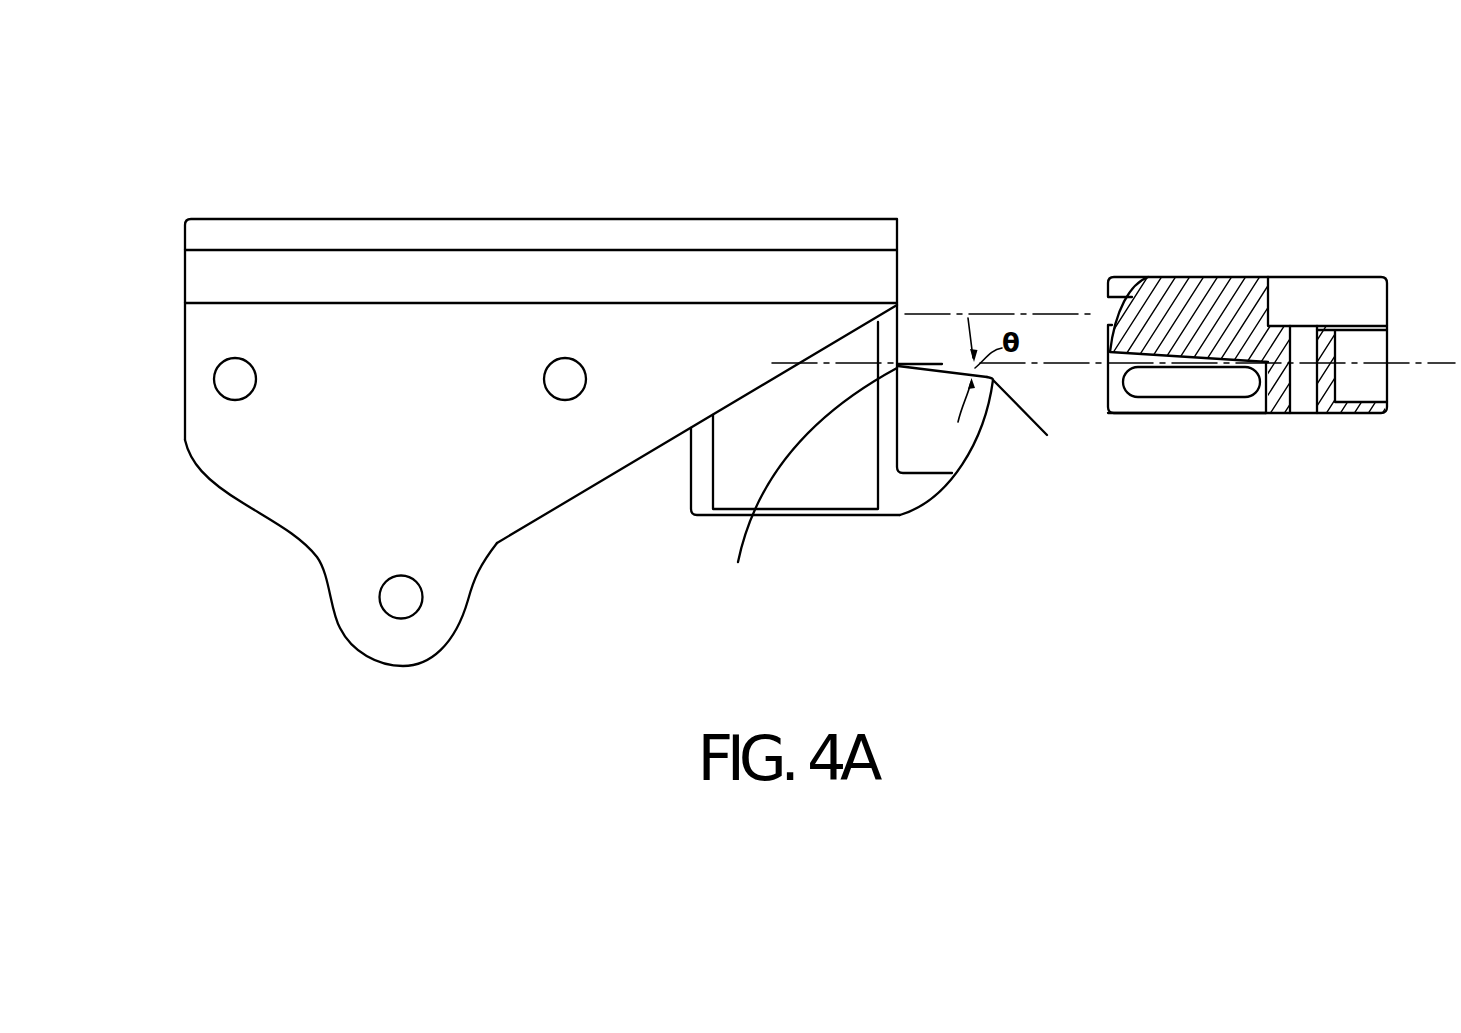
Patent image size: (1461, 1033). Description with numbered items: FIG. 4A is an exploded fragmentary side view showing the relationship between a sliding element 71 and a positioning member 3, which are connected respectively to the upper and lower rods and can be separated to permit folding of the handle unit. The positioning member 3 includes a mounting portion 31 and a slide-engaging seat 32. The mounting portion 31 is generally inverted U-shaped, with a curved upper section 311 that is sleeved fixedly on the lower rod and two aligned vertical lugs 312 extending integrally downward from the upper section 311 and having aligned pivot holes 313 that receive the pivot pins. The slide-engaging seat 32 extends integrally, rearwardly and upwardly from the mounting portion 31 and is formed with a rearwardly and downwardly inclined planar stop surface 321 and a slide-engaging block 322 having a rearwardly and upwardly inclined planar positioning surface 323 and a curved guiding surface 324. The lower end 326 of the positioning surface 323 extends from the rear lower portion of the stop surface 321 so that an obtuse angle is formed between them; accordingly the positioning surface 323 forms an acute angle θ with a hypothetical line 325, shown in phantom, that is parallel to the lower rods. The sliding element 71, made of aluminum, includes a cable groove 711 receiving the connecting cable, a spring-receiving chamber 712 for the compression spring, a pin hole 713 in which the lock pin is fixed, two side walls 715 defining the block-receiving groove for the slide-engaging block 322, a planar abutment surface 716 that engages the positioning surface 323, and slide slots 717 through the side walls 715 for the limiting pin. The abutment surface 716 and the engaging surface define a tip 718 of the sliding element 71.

The positioning member 3 is at (592, 185).
The mounting portion 31 is at (492, 552).
The curved upper section 311 is at (485, 233).
The vertical lugs 312 is at (547, 480).
The pivot holes 313 is at (401, 597).
The slide-engaging seat 32 is at (840, 495).
The stop surface 321 is at (897, 347).
The slide-engaging block 322 is at (943, 428).
The positioning surface 323 is at (932, 374).
The curved guiding surface 324 is at (1033, 427).
The hypothetical line 325 is at (942, 362).
The lower end 326 is at (805, 486).
The sliding element 71 is at (1238, 433).
The cable groove 711 is at (1322, 298).
The spring-receiving chamber 712 is at (1357, 377).
The pin hole 713 is at (1305, 397).
The side walls 715 is at (1131, 404).
The planar abutment surface 716 is at (1207, 360).
The slide slots 717 is at (1187, 390).
The tip 718 is at (1183, 284).